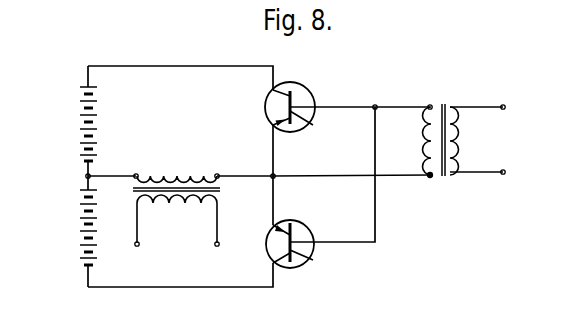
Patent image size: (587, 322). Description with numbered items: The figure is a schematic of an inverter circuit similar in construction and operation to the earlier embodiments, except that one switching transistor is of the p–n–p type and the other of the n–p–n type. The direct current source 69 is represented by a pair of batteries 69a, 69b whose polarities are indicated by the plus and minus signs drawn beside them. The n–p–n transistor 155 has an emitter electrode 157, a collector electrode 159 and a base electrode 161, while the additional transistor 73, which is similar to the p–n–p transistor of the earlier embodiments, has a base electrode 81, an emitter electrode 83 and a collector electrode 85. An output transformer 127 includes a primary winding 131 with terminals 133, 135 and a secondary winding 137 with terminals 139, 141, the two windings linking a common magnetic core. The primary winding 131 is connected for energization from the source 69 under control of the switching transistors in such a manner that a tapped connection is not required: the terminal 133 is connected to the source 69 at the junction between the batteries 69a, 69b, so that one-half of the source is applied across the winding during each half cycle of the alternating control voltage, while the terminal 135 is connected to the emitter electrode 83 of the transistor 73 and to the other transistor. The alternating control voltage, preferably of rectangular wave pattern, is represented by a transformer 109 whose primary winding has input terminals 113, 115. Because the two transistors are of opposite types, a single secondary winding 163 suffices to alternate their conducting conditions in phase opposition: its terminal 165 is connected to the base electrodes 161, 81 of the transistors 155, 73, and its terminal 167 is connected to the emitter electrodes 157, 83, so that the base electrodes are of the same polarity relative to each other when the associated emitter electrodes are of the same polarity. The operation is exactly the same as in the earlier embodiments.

The direct current source 69 is at (49, 186).
The battery 69a is at (95, 125).
The battery 69b is at (94, 256).
The switching transistor 73 is at (313, 233).
The base electrode 81 is at (312, 258).
The emitter electrode 83 is at (279, 223).
The collector electrode 85 is at (283, 266).
The transformer 109 is at (499, 152).
The input terminal 113 is at (505, 108).
The input terminal 115 is at (504, 174).
The output transformer 127 is at (216, 152).
The primary winding 131 is at (163, 176).
The terminal 133 is at (136, 175).
The terminal 135 is at (218, 175).
The secondary winding 137 is at (172, 197).
The terminal 139 is at (139, 244).
The terminal 141 is at (215, 245).
The transistor 155 is at (308, 90).
The emitter electrode 157 is at (282, 127).
The collector electrode 159 is at (281, 91).
The base electrode 161 is at (313, 125).
The secondary winding 163 is at (430, 136).
The terminal 165 is at (431, 105).
The terminal 167 is at (430, 177).